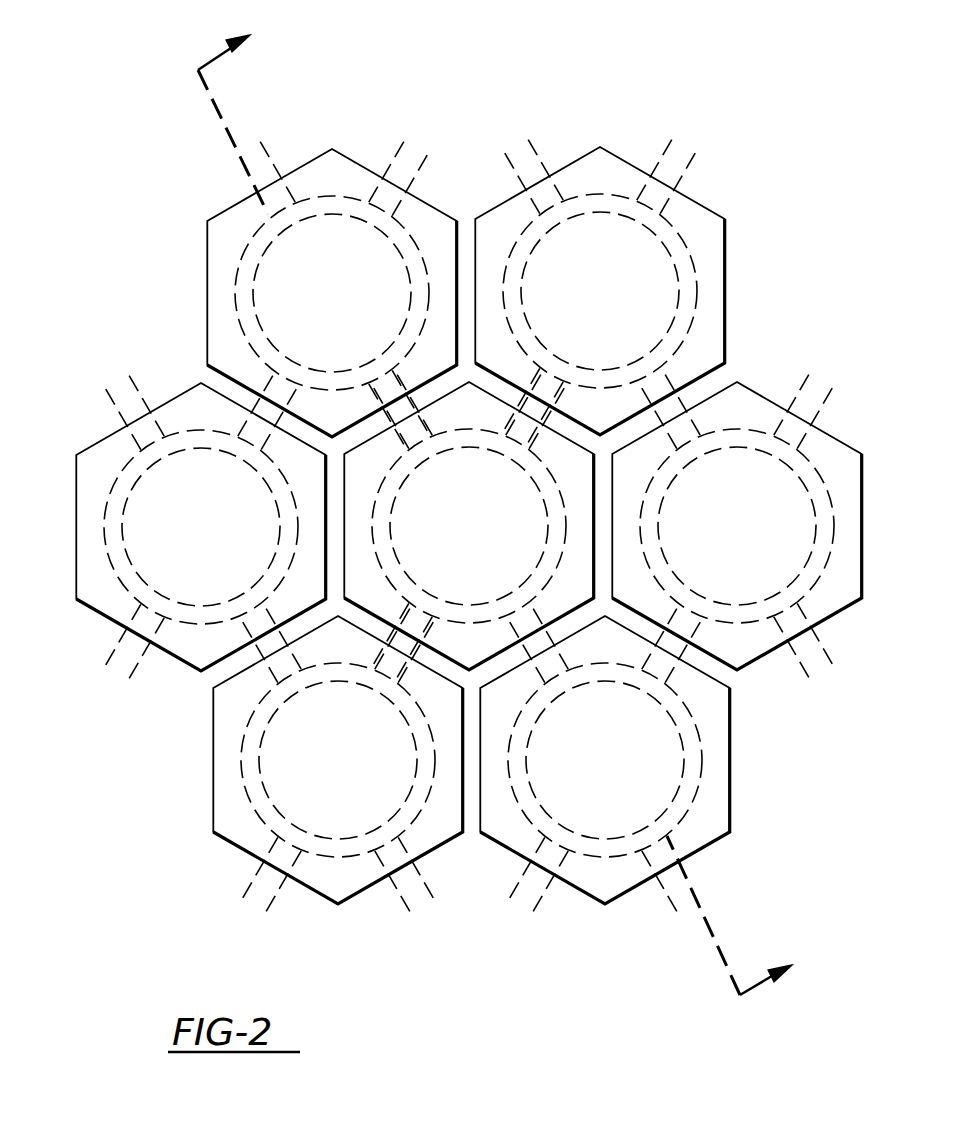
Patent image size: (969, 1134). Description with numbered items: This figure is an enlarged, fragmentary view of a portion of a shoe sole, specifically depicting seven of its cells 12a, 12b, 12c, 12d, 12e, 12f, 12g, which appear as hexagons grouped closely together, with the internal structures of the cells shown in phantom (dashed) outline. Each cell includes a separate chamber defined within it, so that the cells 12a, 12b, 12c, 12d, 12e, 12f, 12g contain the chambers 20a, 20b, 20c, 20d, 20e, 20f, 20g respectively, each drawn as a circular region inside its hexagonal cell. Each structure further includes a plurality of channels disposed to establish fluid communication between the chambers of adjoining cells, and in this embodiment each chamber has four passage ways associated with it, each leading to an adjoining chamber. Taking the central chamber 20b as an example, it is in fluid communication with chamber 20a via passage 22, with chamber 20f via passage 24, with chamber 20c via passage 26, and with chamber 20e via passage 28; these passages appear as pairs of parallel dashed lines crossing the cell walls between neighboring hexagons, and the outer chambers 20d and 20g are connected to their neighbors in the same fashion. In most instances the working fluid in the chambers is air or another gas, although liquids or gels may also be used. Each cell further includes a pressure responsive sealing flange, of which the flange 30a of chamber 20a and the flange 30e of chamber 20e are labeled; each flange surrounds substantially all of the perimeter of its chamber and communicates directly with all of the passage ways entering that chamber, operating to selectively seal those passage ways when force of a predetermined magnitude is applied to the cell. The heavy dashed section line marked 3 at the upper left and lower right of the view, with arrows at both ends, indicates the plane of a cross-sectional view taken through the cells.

The section line 3- 3 is at (512, 497).
The cell 12a is at (720, 787).
The cell 12b is at (478, 397).
The cell 12c is at (333, 165).
The cell 12d is at (848, 497).
The cell 12e is at (600, 160).
The cell 12f is at (230, 820).
The cell 12g is at (100, 593).
The chamber 20a is at (600, 809).
The chamber 20b is at (522, 508).
The chamber 20c is at (320, 333).
The chamber 20d is at (780, 508).
The chamber 20e is at (637, 268).
The chamber 20f is at (350, 761).
The chamber 20g is at (241, 512).
The passage 22 is at (583, 662).
The passage 24 is at (402, 617).
The passage 26 is at (397, 383).
The passage 28 is at (557, 380).
The pressure responsive sealing flange 30a is at (595, 848).
The pressure responsive sealing flange 30e is at (690, 265).